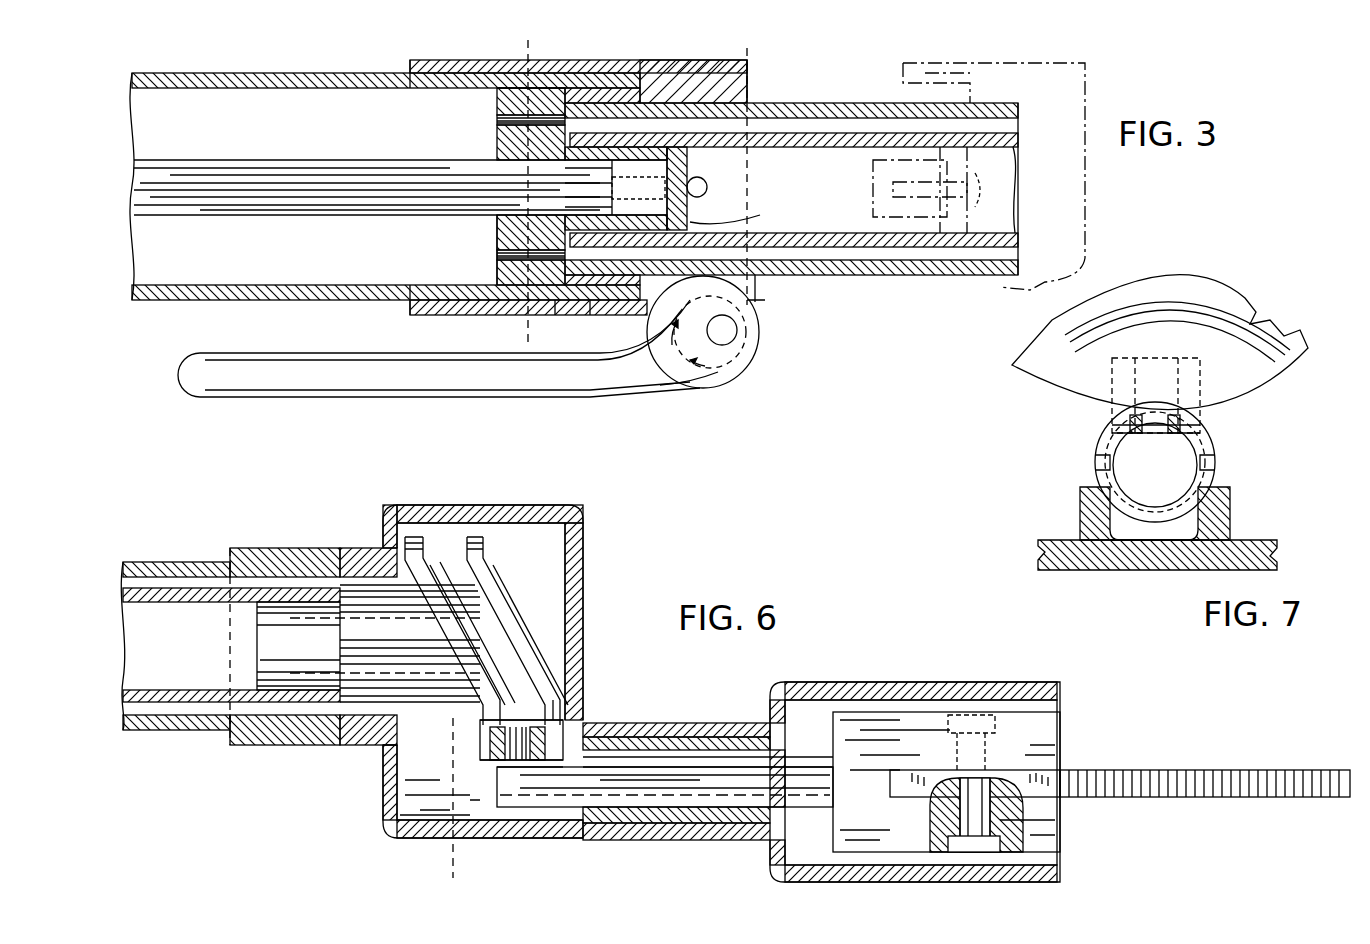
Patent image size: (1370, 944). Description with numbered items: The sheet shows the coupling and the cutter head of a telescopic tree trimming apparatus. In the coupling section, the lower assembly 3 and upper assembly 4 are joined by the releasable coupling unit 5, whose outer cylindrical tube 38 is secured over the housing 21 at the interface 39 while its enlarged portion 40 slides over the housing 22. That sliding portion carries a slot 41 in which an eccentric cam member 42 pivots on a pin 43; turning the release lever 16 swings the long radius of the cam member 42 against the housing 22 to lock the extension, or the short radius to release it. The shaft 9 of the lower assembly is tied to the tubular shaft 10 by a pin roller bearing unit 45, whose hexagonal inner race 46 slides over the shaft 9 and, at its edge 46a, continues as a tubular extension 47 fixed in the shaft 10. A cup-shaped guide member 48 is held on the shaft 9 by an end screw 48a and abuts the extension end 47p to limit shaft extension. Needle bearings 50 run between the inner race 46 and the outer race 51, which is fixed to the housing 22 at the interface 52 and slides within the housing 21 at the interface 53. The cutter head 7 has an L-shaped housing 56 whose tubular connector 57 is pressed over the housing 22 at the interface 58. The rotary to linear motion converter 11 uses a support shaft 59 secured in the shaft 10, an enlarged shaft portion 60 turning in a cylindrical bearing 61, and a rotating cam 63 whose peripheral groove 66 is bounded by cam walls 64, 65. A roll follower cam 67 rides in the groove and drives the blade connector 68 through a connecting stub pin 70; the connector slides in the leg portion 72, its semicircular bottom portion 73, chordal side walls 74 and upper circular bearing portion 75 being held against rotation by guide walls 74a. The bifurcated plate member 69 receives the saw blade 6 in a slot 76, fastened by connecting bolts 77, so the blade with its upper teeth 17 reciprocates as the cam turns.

In FIG. 3, the lower assembly 3 is at (320, 70).
In FIG. 6, the upper assembly 4 is at (198, 562).
In FIG. 3, the releasable coupling unit 5 is at (528, 40).
In FIG. 6, the reciprocating saw blade 6 is at (1240, 770).
In FIG. 6, the cutter head 7 is at (350, 549).
In FIG. 3, the shaft 9 is at (333, 165).
In FIG. 3, the tubular shaft 10 is at (775, 147).
In FIG. 6, the tubular shaft 10 is at (162, 603).
In FIG. 6, the rotary to linear motion converter coupling 11 is at (498, 596).
In FIG. 3, the release lever 16 is at (497, 398).
In FIG. 6, the upper teeth 17 is at (1242, 797).
In FIG. 3, the housing 21 is at (405, 70).
In FIG. 3, the housing 22 is at (832, 103).
In FIG. 6, the housing 22 is at (160, 562).
In FIG. 3, the outer cylindrical tube 38 is at (750, 90).
In FIG. 3, the interface 39 is at (598, 62).
In FIG. 3, the enlarged portion 40 is at (690, 88).
In FIG. 3, the slot 41 is at (770, 288).
In FIG. 3, the eccentric cam member 42 is at (715, 372).
In FIG. 3, the pin 43 is at (742, 347).
In FIG. 3, the pin roller bearing unit 45 is at (497, 232).
In FIG. 3, the inner race 46 is at (522, 128).
In FIG. 3, the sleeve edge 46a is at (517, 163).
In FIG. 3, the tubular extension 47 is at (616, 188).
In FIG. 3, the inner race extension end 47p is at (752, 214).
In FIG. 3, the guide member 48 is at (690, 155).
In FIG. 3, the end screw 48a is at (720, 194).
In FIG. 3, the needle bearings 50 is at (500, 120).
In FIG. 3, the outer race 51 is at (512, 100).
In FIG. 3, the interface 52 is at (555, 302).
In FIG. 3, the sliding interface 53 is at (590, 302).
In FIG. 6, the L-shaped housing 56 is at (585, 605).
In FIG. 6, the tubular connector 57 is at (272, 745).
In FIG. 6, the interface 58 is at (240, 745).
In FIG. 6, the support shaft 59 is at (282, 602).
In FIG. 6, the enlarged shaft portion 60 is at (383, 745).
In FIG. 6, the cylindrical bearing 61 is at (366, 700).
In FIG. 6, the rotating cam 63 is at (515, 625).
In FIG. 6, the cam wall 64 is at (480, 722).
In FIG. 7, the cam wall 64 is at (1282, 378).
In FIG. 6, the cam wall 65 is at (565, 658).
In FIG. 7, the cam wall 65 is at (1265, 312).
In FIG. 6, the peripheral groove 66 is at (455, 537).
In FIG. 6, the roll follower cam 67 is at (560, 725).
In FIG. 7, the roll follower cam 67 is at (1145, 436).
In FIG. 6, the blade connector 68 is at (600, 838).
In FIG. 6, the bifurcated plate member 69 is at (1040, 838).
In FIG. 6, the connecting stub pin 70 is at (500, 765).
In FIG. 6, the leg portion 72 is at (720, 723).
In FIG. 7, the leg portion 72 is at (1095, 572).
In FIG. 6, the semicircular bottom portion 73 is at (795, 805).
In FIG. 7, the semicircular bottom portion 73 is at (1150, 545).
In FIG. 6, the chordal side walls 74 is at (830, 787).
In FIG. 7, the chordal side walls 74 is at (1220, 470).
In FIG. 7, the guide walls 74a is at (1080, 505).
In FIG. 6, the upper circular bearing portion 75 is at (835, 768).
In FIG. 7, the upper circular bearing portion 75 is at (1210, 425).
In FIG. 6, the slot 76 is at (1040, 770).
In FIG. 7, the slot 76 is at (1100, 425).
In FIG. 6, the connecting bolts 77 is at (970, 850).